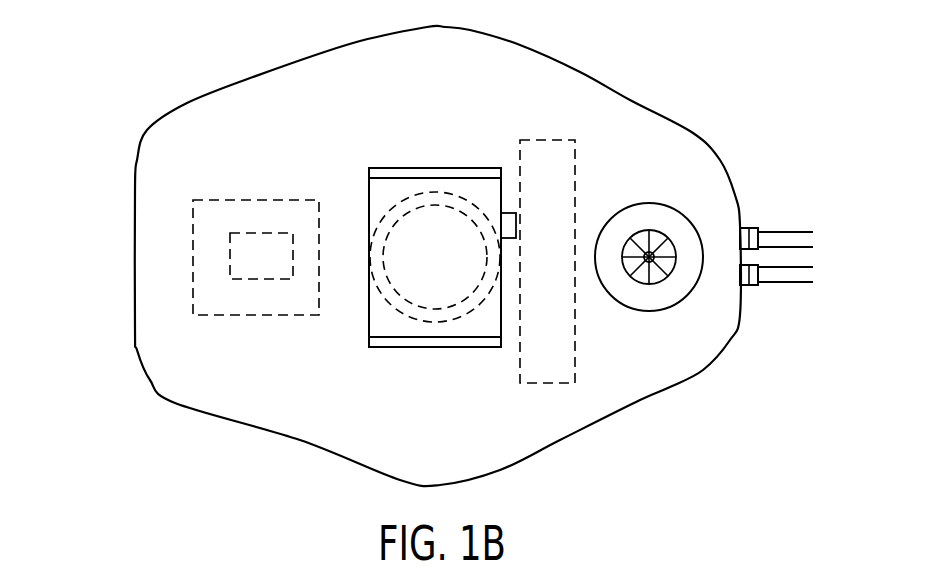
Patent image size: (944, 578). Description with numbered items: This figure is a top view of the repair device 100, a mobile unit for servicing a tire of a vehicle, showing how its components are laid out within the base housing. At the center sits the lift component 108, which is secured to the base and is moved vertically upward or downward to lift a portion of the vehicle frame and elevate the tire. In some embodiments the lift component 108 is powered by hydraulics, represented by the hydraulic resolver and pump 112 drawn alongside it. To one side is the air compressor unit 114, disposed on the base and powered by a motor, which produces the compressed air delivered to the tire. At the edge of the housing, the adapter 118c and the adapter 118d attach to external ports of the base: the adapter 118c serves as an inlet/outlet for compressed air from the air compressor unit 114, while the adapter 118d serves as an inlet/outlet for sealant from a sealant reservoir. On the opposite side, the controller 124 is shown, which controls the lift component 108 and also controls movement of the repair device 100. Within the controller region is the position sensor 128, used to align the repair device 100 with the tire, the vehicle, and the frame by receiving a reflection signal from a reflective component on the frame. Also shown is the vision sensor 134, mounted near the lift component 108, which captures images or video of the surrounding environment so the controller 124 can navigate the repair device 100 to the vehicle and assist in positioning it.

The repair device 100 is at (580, 72).
The lift component 108 is at (402, 347).
The hydraulic resolver and pump 112 is at (576, 201).
The air compressor unit 114 is at (687, 297).
The adapter 118c is at (783, 232).
The adapter 118d is at (783, 283).
The controller 124 is at (192, 286).
The position sensor 128 is at (230, 245).
The vision sensor 134 is at (510, 213).